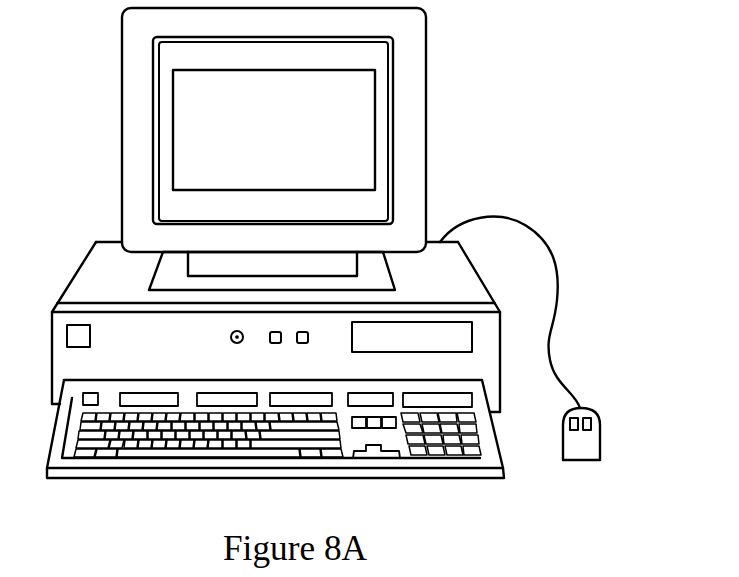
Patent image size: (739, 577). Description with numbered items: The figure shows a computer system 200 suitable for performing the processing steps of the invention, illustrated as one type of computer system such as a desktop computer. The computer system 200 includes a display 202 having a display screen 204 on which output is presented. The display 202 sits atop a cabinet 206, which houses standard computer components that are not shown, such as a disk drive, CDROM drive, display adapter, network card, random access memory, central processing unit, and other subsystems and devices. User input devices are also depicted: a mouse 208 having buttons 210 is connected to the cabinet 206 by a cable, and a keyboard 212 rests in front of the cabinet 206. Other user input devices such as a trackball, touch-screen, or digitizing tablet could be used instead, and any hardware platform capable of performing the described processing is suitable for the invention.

The computer system 200 is at (547, 50).
The display 202 is at (427, 117).
The display screen 204 is at (360, 100).
The cabinet 206 is at (453, 278).
The mouse 208 is at (591, 445).
The buttons 210 is at (573, 410).
The keyboard 212 is at (193, 480).